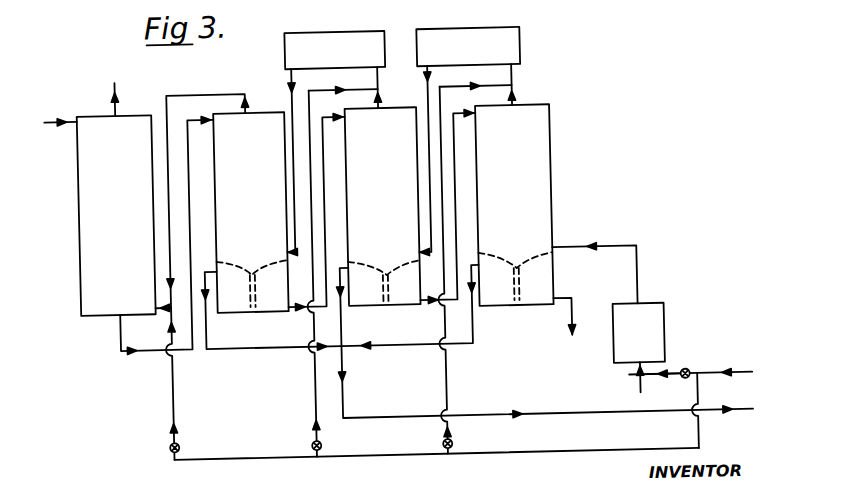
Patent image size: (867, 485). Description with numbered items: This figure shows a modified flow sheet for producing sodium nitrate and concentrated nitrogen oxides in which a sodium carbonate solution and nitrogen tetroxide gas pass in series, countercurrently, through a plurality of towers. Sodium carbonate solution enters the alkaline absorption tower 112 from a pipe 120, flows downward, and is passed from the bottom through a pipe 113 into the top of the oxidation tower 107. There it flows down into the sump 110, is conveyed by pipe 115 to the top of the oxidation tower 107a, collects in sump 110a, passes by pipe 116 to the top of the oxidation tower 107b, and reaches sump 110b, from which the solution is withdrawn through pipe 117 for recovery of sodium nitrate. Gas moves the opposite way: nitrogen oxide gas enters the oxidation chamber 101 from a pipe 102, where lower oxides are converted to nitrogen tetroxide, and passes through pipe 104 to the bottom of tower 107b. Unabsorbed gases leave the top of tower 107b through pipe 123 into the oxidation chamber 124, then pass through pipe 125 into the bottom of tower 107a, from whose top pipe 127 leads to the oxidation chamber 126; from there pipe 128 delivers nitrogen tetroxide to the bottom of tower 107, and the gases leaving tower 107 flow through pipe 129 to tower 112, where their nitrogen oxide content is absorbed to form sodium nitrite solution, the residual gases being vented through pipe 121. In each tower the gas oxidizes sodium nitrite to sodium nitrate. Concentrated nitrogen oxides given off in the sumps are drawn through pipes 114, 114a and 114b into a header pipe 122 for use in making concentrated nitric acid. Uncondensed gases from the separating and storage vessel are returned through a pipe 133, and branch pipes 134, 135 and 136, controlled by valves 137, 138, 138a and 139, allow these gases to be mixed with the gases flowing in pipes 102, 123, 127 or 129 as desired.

The oxidation chamber 101 is at (660, 307).
The pipe 102 is at (648, 377).
The pipe 104 is at (601, 250).
The oxidation tower 107 is at (269, 108).
The oxidation tower 107a is at (402, 106).
The oxidation tower 107b is at (552, 107).
The sump 110 is at (253, 284).
The sump 110a is at (387, 281).
The sump 110b is at (517, 276).
The alkaline absorption tower 112 is at (80, 182).
The pipe 113 is at (123, 345).
The pipe 114 is at (206, 329).
The pipe 114a is at (342, 328).
The pipe 114b is at (475, 331).
The pipe 115 is at (307, 225).
The pipe 116 is at (439, 221).
The pipe 117 is at (573, 345).
The pipe 120 is at (57, 111).
The pipe 121 is at (119, 76).
The header pipe 122 is at (369, 412).
The pipe 123 is at (521, 74).
The oxidation chamber 124 is at (471, 36).
The pipe 125 is at (431, 73).
The oxidation chamber 126 is at (336, 33).
The pipe 127 is at (376, 89).
The pipe 128 is at (295, 75).
The pipe 129 is at (211, 87).
The pipe 133 is at (740, 375).
The pipe 134 is at (673, 376).
The pipe 135 is at (310, 390).
The pipe 136 is at (174, 391).
The valve 137 is at (680, 384).
The valve 138 is at (308, 442).
The valve 138a is at (449, 444).
The valve 139 is at (176, 440).